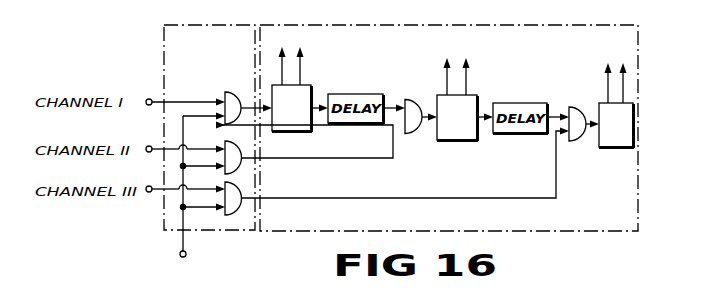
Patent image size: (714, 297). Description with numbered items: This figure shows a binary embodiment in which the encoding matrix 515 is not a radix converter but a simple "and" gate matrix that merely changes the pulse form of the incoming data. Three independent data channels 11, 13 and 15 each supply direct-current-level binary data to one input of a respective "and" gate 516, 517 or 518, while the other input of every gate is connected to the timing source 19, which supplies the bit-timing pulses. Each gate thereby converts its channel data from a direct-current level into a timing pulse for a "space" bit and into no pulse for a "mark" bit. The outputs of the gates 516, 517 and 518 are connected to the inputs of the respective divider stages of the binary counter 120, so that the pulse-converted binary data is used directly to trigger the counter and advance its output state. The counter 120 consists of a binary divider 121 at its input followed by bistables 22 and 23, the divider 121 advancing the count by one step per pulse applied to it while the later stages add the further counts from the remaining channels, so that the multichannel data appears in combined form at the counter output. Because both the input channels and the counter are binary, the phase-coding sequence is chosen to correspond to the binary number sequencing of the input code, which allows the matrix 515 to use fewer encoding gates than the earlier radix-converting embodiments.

The channel I input terminal 11 is at (149, 98).
The channel II input terminal 13 is at (149, 145).
The encoding matrix 15 is at (149, 185).
The timing source 19 is at (187, 253).
The encoding matrix 515 is at (224, 87).
The "and" gate 516 is at (236, 123).
The "and" gate 517 is at (236, 172).
The "and" gate 518 is at (236, 213).
The binary divider 121 is at (299, 132).
The bistable 22 is at (450, 141).
The bistable 23 is at (624, 148).
The binary counter 120 is at (562, 227).